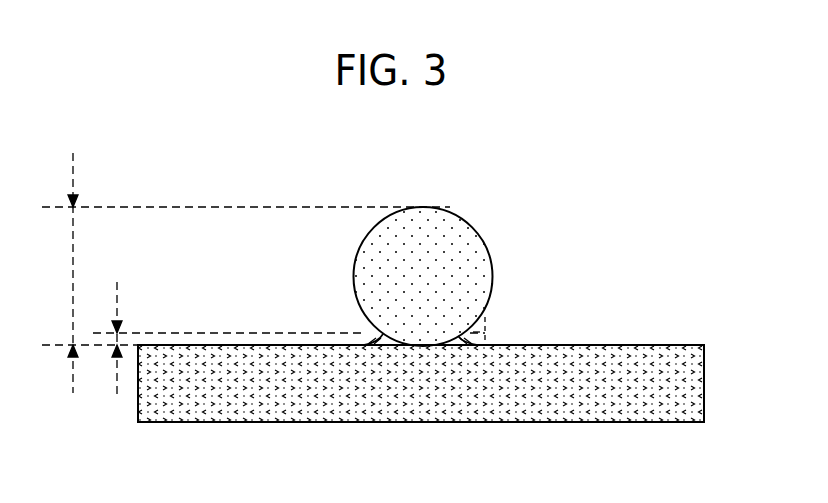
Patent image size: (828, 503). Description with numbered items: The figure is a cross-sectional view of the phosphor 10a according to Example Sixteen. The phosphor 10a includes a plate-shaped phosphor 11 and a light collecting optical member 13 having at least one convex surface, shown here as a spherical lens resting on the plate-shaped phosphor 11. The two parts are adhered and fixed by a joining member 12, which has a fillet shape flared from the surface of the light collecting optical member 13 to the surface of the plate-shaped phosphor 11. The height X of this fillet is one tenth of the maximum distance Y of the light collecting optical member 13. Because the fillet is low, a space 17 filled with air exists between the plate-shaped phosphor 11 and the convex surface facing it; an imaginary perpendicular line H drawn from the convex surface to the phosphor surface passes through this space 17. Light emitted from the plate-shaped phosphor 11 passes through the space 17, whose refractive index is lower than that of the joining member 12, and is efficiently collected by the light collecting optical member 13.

The phosphor 10a is at (575, 235).
The plate-shaped phosphor 11 is at (650, 397).
The joining member 12 is at (462, 345).
The light collecting optical member 13 is at (465, 248).
The space 17 is at (473, 332).
The imaginary perpendicular line H is at (487, 313).
The height of the fillet shape X is at (289, 340).
The maximum distance of the light collecting optical member Y is at (246, 273).